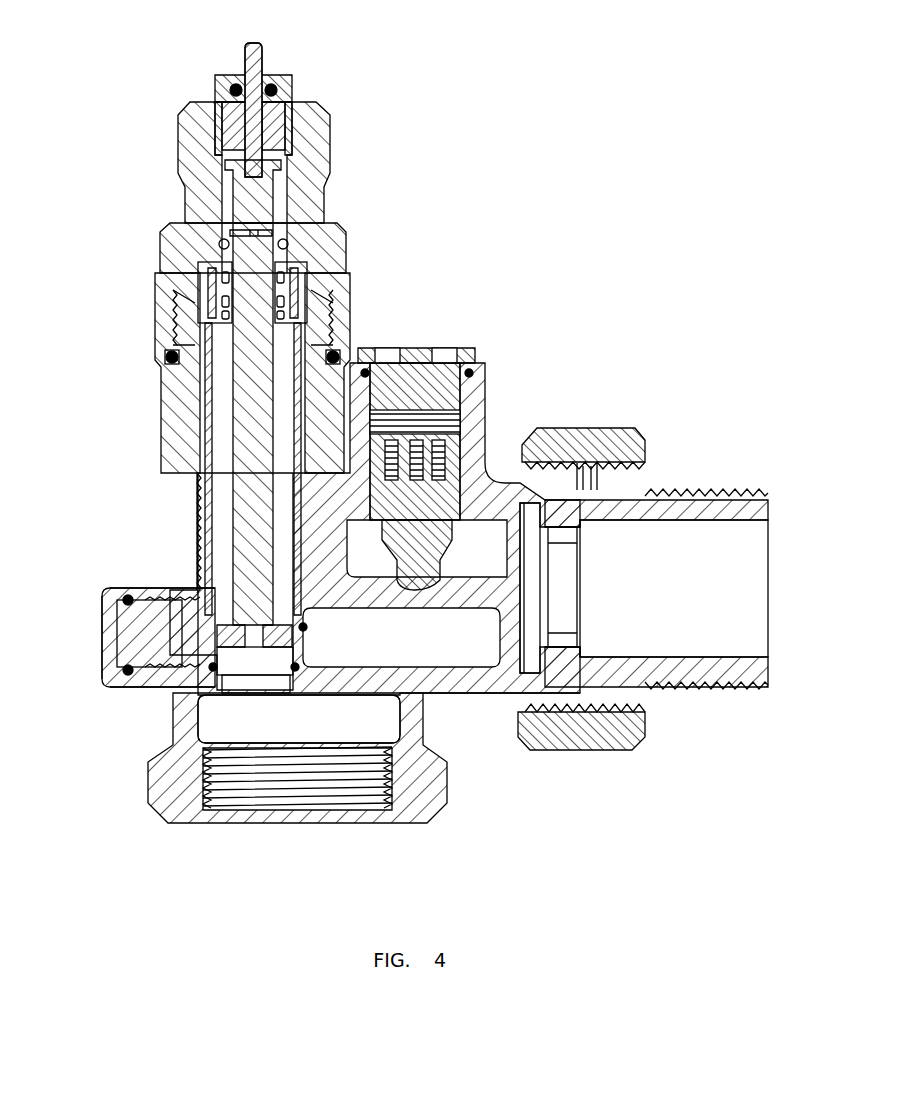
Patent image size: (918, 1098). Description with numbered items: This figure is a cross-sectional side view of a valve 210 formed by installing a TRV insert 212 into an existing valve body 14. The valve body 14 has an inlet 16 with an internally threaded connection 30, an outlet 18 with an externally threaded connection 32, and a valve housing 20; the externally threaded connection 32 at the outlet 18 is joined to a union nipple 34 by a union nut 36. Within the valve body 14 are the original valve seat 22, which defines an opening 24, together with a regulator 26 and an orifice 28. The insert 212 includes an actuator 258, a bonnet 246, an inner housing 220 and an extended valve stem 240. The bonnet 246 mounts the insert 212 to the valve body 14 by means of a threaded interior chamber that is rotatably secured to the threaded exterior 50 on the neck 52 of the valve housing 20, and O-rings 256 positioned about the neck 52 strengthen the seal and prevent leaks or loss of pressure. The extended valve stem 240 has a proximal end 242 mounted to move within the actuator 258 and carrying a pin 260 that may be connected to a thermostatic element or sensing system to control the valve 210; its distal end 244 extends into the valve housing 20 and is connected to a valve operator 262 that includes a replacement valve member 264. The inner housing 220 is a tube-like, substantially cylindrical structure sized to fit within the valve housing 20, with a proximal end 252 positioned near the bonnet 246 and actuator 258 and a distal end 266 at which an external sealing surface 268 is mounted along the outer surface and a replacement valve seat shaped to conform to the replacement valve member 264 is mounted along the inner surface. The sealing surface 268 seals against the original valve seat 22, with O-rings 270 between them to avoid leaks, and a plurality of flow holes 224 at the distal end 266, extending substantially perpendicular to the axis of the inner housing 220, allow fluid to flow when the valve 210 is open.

The valve 210 is at (492, 78).
The TRV insert 212 is at (372, 157).
The valve housing 20 is at (118, 481).
The valve body 14 is at (168, 525).
The inlet 16 is at (295, 835).
The outlet 18 is at (788, 566).
The valve seat 22 is at (172, 750).
The opening 24 is at (252, 706).
The regulator 26 is at (465, 347).
The orifice 28 is at (420, 612).
The internally threaded connection 30 is at (293, 669).
The externally threaded connection 32 is at (545, 700).
The union nipple 34 is at (665, 490).
The union nut 36 is at (555, 425).
The threaded exterior 50 is at (340, 318).
The neck 52 is at (323, 287).
The inner housing 220 is at (205, 440).
The flow holes 224 is at (128, 600).
The extended valve stem 240 is at (245, 480).
The proximal end 242 is at (245, 217).
The distal end 244 is at (235, 615).
The bonnet 246 is at (348, 292).
The proximal end 252 is at (215, 302).
The O-rings 256 is at (338, 352).
The actuator 258 is at (330, 130).
The pin 260 is at (250, 58).
The valve operator 262 is at (250, 640).
The replacement valve member 264 is at (128, 670).
The distal end 266 is at (223, 604).
The external sealing surface 268 is at (215, 668).
The O-rings 270 is at (210, 670).